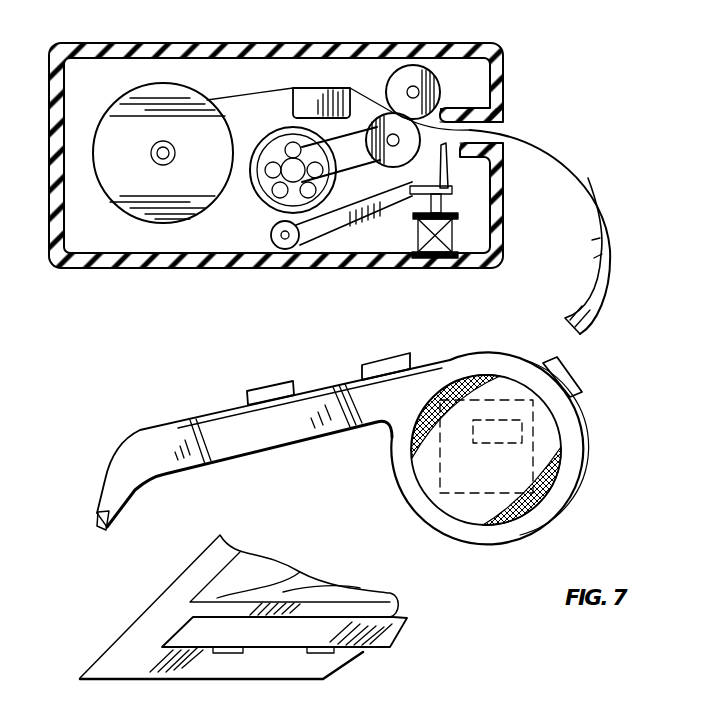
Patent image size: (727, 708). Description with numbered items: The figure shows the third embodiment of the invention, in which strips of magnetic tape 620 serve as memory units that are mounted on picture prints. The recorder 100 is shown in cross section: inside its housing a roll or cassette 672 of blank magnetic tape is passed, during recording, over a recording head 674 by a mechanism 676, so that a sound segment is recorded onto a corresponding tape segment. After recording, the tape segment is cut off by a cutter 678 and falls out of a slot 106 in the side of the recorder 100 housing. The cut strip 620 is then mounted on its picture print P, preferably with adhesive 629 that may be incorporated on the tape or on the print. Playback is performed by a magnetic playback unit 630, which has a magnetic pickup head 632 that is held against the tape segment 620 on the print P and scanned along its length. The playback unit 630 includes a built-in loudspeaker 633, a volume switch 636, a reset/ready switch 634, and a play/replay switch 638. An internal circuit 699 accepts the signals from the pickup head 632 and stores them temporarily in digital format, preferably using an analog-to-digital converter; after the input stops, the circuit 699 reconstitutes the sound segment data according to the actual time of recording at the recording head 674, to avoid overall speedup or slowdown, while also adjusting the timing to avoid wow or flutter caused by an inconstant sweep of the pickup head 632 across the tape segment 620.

The recorder 100 is at (70, 44).
The slot 106 is at (506, 124).
The roll or cassette 672 is at (132, 110).
The recording head 674 is at (307, 103).
The mechanism 676 is at (430, 62).
The cutter 678 is at (443, 199).
The strip of magnetic tape 620 is at (602, 193).
The magnetic playback unit 630 is at (355, 417).
The magnetic pickup head 632 is at (98, 522).
The built-in loudspeaker 633 is at (553, 477).
The reset/ready switch 634 is at (392, 335).
The volume switch 636 is at (573, 383).
The play/replay switch 638 is at (267, 390).
The internal circuit 699 is at (507, 435).
The picture print P is at (173, 597).
The adhesive 629 is at (330, 657).